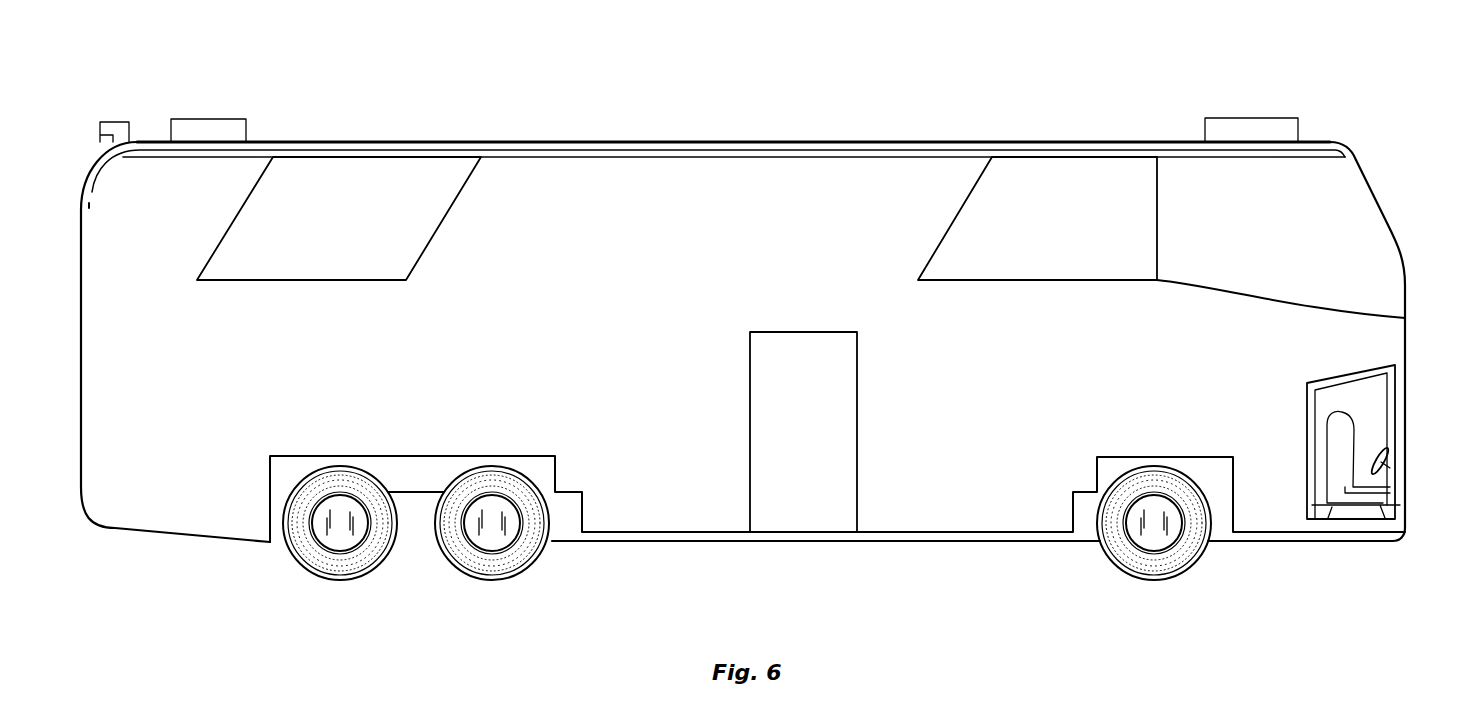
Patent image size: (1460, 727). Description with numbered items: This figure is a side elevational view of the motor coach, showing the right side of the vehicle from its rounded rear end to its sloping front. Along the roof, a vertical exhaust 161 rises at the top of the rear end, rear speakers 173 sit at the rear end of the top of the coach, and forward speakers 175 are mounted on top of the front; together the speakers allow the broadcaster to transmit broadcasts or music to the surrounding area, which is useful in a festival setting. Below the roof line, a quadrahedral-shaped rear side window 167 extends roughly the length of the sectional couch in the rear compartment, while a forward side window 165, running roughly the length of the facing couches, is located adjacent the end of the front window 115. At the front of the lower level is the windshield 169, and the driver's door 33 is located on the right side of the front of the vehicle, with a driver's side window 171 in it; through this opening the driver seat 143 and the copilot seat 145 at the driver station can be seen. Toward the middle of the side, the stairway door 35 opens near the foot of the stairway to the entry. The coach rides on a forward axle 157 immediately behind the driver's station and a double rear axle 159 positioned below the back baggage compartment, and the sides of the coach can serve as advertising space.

The front window 115 is at (1357, 205).
The vertical exhaust 161 is at (113, 121).
The rear speakers 173 is at (217, 118).
The forward speakers 175 is at (1260, 117).
The rear side windows 167 is at (352, 173).
The forward side windows 165 is at (1059, 168).
The stairway door 35 is at (858, 377).
The driver's door 33 is at (1308, 418).
The driver's side windows 171 is at (1330, 395).
The driver seat 143 is at (1355, 420).
The windshield 169 is at (1405, 417).
The copilot seat 145 is at (1327, 493).
The double rear axle 159 is at (327, 550).
The forward axle 157 is at (1150, 543).